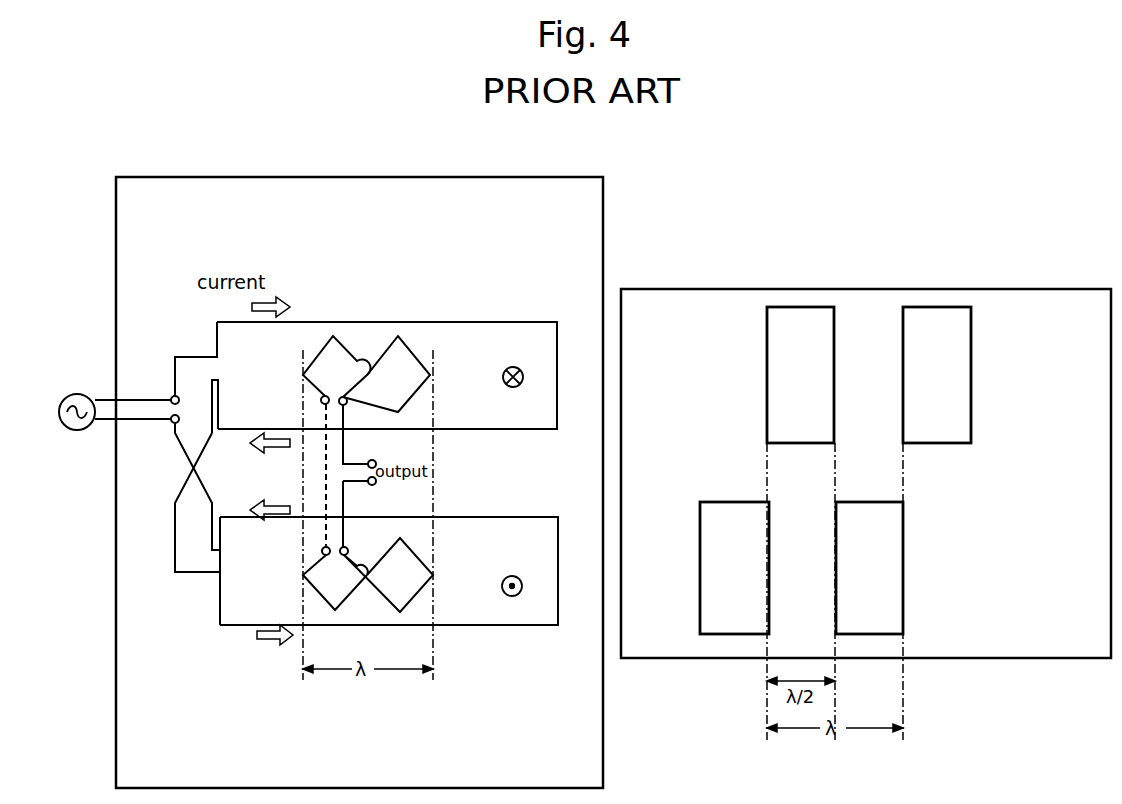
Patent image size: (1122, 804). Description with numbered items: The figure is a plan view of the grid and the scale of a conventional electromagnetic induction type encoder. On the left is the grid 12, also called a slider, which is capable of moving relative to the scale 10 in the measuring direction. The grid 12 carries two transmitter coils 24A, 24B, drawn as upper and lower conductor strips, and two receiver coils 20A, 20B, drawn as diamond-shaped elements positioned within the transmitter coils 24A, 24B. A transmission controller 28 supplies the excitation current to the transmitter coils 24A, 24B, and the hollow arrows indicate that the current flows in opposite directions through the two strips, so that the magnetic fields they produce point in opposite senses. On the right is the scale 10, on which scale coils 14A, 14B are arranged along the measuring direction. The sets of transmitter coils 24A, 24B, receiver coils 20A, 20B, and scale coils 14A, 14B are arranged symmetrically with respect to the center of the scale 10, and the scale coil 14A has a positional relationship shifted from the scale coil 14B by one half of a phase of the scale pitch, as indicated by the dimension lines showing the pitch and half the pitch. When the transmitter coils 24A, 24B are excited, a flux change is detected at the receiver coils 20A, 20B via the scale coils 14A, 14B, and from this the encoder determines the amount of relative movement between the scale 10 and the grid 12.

The grid 12 is at (367, 177).
The scale 10 is at (880, 289).
The scale coil 14A is at (971, 351).
The scale coil 14B is at (903, 558).
The receiver coil 20A is at (330, 338).
The receiver coil 20B is at (327, 602).
The transmitter coil 24A is at (455, 318).
The transmitter coil 24B is at (465, 517).
The transmission controller 28 is at (77, 393).